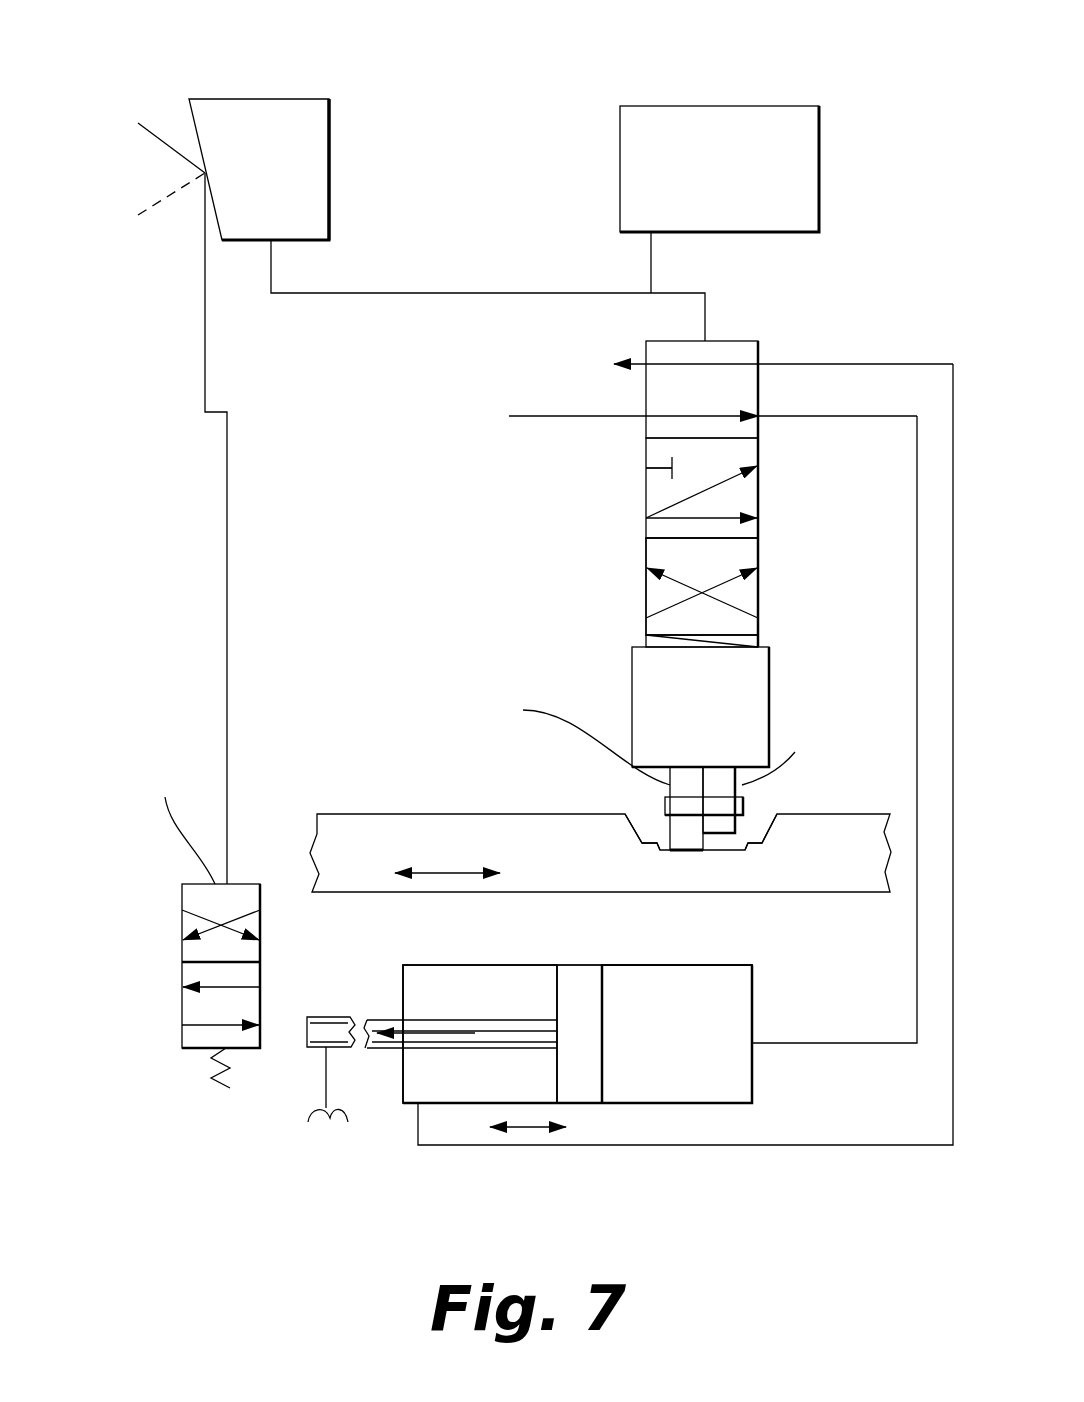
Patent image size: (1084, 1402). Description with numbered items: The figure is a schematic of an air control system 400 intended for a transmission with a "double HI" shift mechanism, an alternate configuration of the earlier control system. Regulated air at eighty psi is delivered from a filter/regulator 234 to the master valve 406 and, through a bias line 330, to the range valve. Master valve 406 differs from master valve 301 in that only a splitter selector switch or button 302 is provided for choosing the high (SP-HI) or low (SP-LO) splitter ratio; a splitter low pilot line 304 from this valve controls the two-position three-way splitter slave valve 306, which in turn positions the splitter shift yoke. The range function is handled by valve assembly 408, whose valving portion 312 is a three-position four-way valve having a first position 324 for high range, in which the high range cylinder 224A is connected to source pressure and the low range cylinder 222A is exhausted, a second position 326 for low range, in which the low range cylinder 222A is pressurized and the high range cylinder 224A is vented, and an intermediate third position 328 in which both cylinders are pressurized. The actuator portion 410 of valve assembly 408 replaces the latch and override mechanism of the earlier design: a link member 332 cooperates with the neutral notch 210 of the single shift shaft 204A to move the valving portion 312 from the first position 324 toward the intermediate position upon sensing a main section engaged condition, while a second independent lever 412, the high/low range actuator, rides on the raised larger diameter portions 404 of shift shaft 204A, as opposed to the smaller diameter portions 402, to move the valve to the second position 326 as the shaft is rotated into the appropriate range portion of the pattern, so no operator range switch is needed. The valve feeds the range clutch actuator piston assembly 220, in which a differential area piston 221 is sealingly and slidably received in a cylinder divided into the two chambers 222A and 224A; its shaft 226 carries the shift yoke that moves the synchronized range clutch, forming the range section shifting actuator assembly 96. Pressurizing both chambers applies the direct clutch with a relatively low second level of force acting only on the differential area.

The master valve 301 is at (273, 80).
The master valve 406 is at (333, 137).
The splitter selector switch 302 is at (172, 151).
The splitter low pilot line 304 is at (227, 558).
The filter/regulator 234 is at (750, 100).
The air control system 400 is at (954, 44).
The bias line 330 is at (705, 313).
The first position 324 is at (731, 389).
The third position 328 is at (702, 488).
The second position 326 is at (656, 574).
The three-position four-way valve 312 is at (627, 470).
The valve assembly 408 is at (626, 608).
The actuator portion 410 is at (790, 655).
The link member 332 is at (682, 826).
The lever 412 is at (745, 806).
The relatively larger diameter portions 404 is at (490, 814).
The single shift shaft 204A is at (430, 825).
The splitter slave valve 306 is at (163, 930).
The range clutch actuator piston assembly 220 is at (652, 1108).
The neutral notch 210 is at (577, 1011).
The low range cylinder 222A is at (480, 1034).
The high range cylinder 224A is at (677, 1034).
The range section shifting actuator assembly 96 is at (780, 1008).
The shaft 226 is at (557, 1000).
The differential area piston 221 is at (585, 1060).
The relatively smaller diameter portions 402 is at (501, 984).